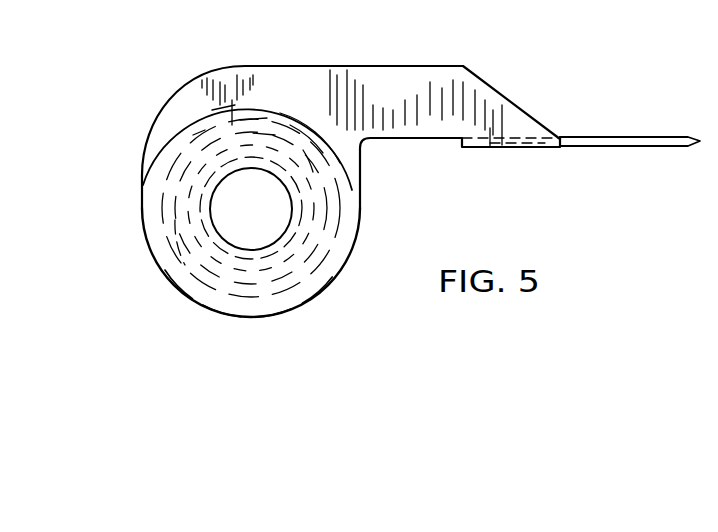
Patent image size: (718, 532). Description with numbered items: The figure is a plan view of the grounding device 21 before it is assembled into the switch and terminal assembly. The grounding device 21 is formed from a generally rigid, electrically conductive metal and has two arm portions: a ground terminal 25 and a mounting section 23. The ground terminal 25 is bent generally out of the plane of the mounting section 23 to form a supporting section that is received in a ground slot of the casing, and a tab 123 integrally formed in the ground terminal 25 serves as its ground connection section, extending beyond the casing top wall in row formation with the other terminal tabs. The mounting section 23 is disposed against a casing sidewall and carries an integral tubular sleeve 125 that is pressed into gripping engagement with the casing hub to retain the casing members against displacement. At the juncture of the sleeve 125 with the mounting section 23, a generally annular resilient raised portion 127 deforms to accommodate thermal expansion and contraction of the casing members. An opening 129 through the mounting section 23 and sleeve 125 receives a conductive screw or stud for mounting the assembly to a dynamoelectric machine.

The grounding device 21 is at (434, 55).
The mounting section 23 is at (142, 169).
The ground terminal 25 is at (515, 147).
The tab 123 is at (627, 146).
The sleeve 125 is at (200, 233).
The raised portion 127 is at (325, 237).
The opening 129 is at (232, 178).